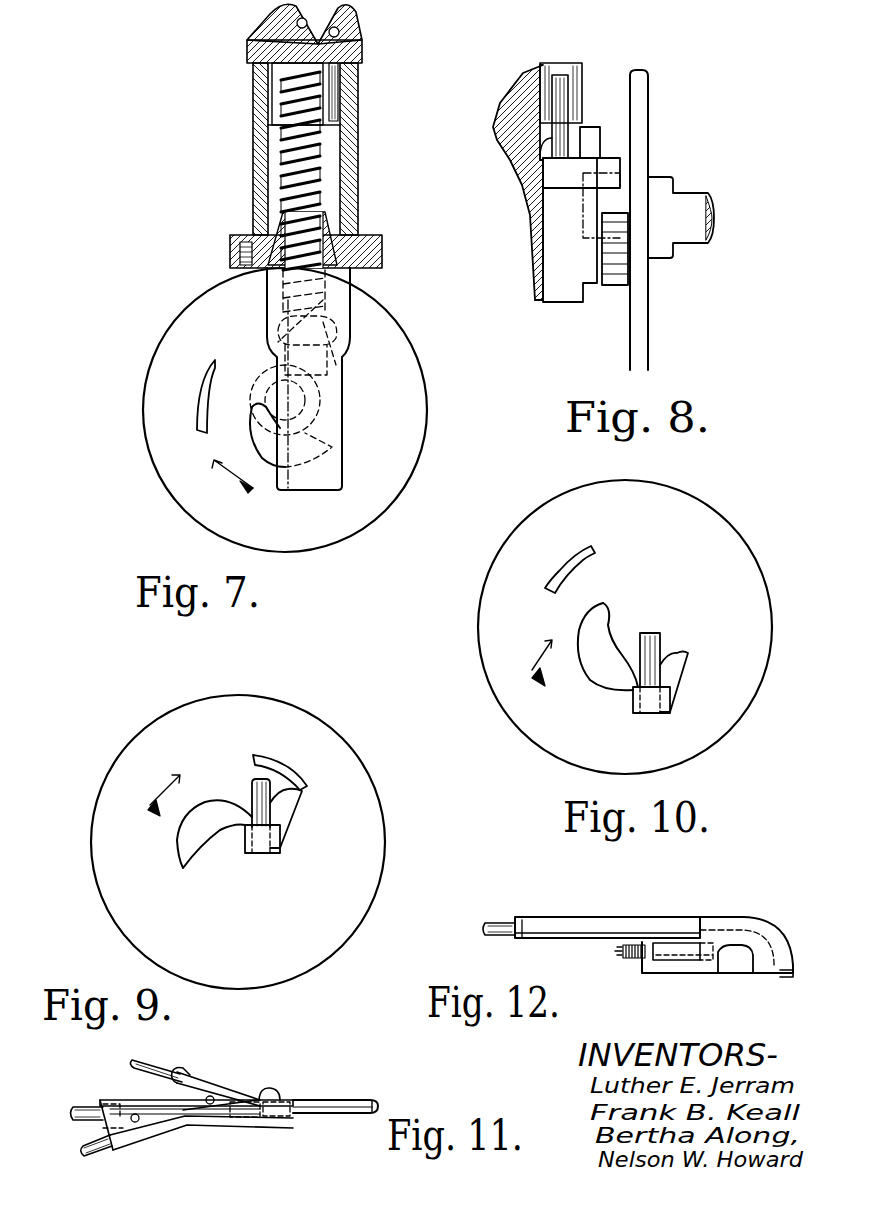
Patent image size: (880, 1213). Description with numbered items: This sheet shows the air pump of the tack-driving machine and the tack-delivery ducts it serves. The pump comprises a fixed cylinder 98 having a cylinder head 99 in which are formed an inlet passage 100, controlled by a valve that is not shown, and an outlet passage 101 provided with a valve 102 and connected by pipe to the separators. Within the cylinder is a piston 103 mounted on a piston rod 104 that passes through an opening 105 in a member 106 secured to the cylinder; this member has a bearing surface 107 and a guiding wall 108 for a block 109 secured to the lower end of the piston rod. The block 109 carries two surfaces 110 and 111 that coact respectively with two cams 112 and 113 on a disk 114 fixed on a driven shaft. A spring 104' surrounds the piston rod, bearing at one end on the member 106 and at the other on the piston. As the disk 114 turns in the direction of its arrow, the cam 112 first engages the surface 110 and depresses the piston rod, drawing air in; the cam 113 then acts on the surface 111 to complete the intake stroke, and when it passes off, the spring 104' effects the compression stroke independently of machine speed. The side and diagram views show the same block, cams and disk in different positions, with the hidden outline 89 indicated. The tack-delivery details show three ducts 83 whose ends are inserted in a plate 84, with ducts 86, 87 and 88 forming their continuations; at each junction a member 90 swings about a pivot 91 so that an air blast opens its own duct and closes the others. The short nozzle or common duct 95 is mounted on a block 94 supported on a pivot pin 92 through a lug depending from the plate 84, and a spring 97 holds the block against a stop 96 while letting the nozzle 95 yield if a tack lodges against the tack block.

In FIG. 12, the ducts 83 is at (507, 923).
In FIG. 11, the ducts 83 is at (90, 1131).
In FIG. 12, the plate 84 is at (548, 928).
In FIG. 11, the duct 86 is at (188, 1112).
In FIG. 11, the duct 87 is at (185, 1113).
In FIG. 11, the duct 88 is at (140, 1128).
In FIG. 11, the hidden slot 89 is at (285, 1120).
In FIG. 11, the member 90 is at (147, 1113).
In FIG. 11, the pivot 91 is at (135, 1114).
In FIG. 12, the pivot pin 92 is at (617, 951).
In FIG. 12, the block 94 is at (710, 963).
In FIG. 11, the block 94 is at (325, 1101).
In FIG. 12, the common duct (nozzle) 95 is at (790, 976).
In FIG. 11, the common duct (nozzle) 95 is at (358, 1112).
In FIG. 12, the stop 96 is at (672, 962).
In FIG. 11, the stop 96 is at (270, 1090).
In FIG. 12, the spring 97 is at (632, 960).
In FIG. 7, the cylinder 98 is at (358, 160).
In FIG. 7, the cylinder head 99 is at (296, 22).
In FIG. 7, the inlet passage 100 is at (250, 55).
In FIG. 7, the outlet passage 101 is at (340, 18).
In FIG. 7, the valve 102 is at (360, 34).
In FIG. 7, the piston 103 is at (337, 86).
In FIG. 7, the piston rod 104 is at (348, 171).
In FIG. 7, the spring 104' is at (344, 192).
In FIG. 7, the opening 105 is at (292, 320).
In FIG. 8, the opening 105 is at (550, 127).
In FIG. 7, the member 106 is at (340, 292).
In FIG. 8, the member 106 is at (502, 114).
In FIG. 7, the bearing surface 107 is at (332, 405).
In FIG. 8, the bearing surface 107 is at (538, 272).
In FIG. 8, the guiding wall 108 is at (565, 245).
In FIG. 8, the block 109 is at (572, 165).
In FIG. 9, the block 109 is at (285, 850).
In FIG. 8, the surface 110 is at (590, 146).
In FIG. 10, the surface 110 is at (677, 672).
In FIG. 9, the surface 110 is at (285, 812).
In FIG. 8, the surface 111 is at (612, 164).
In FIG. 7, the cam 112 is at (197, 397).
In FIG. 8, the cam 112 is at (618, 205).
In FIG. 10, the cam 112 is at (585, 555).
In FIG. 9, the cam 112 is at (277, 767).
In FIG. 7, the cam 113 is at (275, 458).
In FIG. 8, the cam 113 is at (622, 268).
In FIG. 10, the cam 113 is at (603, 610).
In FIG. 9, the cam 113 is at (185, 838).
In FIG. 7, the disk 114 is at (338, 515).
In FIG. 8, the disk 114 is at (643, 336).
In FIG. 10, the disk 114 is at (715, 548).
In FIG. 9, the disk 114 is at (345, 757).